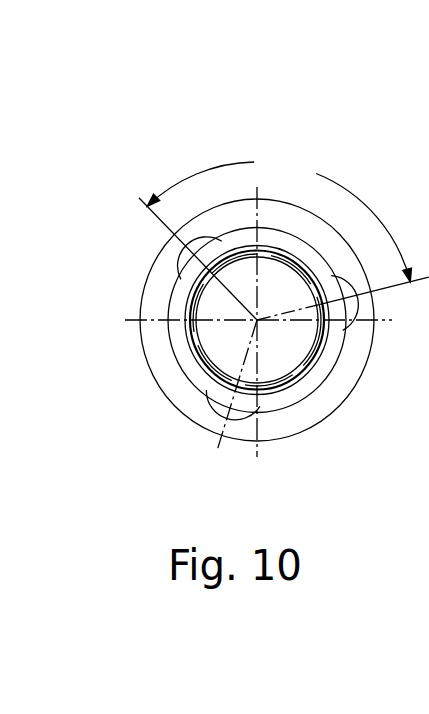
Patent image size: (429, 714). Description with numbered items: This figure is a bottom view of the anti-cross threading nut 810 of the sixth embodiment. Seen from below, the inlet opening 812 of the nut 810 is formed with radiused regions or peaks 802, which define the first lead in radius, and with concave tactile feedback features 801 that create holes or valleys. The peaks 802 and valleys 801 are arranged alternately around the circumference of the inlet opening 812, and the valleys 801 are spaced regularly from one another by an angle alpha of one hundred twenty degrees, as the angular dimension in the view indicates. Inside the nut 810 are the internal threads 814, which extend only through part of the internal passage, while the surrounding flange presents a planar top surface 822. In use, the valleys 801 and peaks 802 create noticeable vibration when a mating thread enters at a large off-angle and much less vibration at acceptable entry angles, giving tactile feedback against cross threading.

The anti-cross threading nut 810 is at (300, 145).
The tactile feedback features 801 is at (180, 255).
The radiused regions 802 is at (182, 354).
The inlet opening 812 is at (332, 355).
The internal threads 814 is at (203, 364).
The planar top surface 822 is at (302, 415).